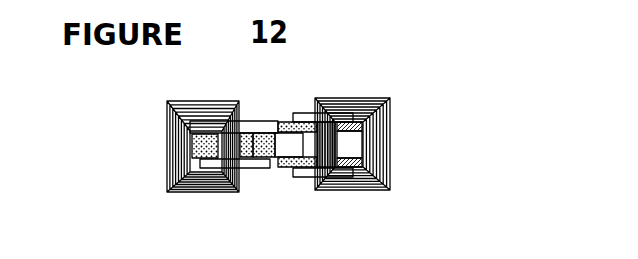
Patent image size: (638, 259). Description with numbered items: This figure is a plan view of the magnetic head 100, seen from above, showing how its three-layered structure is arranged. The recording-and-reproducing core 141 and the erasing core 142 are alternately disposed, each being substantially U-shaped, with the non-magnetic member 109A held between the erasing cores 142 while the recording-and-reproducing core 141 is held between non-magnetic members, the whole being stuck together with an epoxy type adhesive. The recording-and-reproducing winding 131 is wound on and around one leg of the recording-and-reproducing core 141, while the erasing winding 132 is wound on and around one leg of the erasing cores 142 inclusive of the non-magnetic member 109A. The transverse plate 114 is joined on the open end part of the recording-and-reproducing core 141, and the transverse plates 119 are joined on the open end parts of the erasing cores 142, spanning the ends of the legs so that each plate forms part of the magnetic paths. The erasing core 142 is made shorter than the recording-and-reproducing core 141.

The magnetic head 100 is at (399, 127).
The recording-and-reproducing winding 131 is at (188, 101).
The erasing winding 132 is at (379, 98).
The recording-and-reproducing core 141 is at (260, 131).
The transverse plates 119 is at (299, 113).
The transverse plate 114 is at (211, 167).
The erasing core 142 is at (356, 121).
The non-magnetic member 109A is at (352, 142).